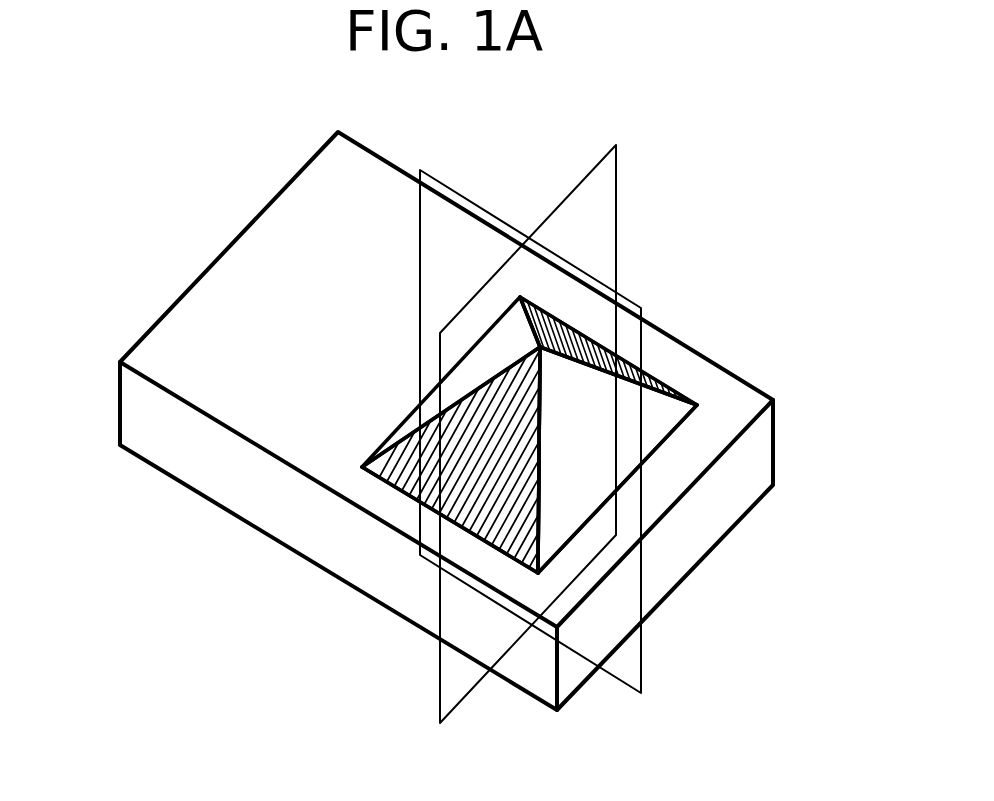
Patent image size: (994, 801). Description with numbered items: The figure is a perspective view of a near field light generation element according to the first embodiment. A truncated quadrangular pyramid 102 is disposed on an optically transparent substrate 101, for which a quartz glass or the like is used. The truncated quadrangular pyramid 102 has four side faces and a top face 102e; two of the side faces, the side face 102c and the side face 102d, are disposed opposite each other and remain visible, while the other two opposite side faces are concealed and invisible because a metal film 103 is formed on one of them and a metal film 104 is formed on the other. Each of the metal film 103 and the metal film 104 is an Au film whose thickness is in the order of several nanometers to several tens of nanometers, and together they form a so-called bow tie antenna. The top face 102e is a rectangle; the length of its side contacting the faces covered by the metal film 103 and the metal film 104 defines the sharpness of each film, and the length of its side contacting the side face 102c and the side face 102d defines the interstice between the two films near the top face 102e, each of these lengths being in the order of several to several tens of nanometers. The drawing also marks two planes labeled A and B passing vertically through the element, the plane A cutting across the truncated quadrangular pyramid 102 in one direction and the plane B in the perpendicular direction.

The optically transparent substrate 101 is at (308, 240).
The truncated quadrangular pyramid 102 is at (587, 407).
The side face 102c is at (490, 365).
The side face 102d is at (573, 487).
The top face 102e is at (540, 347).
The metal film 103 is at (490, 523).
The metal film 104 is at (551, 411).
The cross-section plane A is at (600, 200).
The cross-section plane B is at (442, 213).